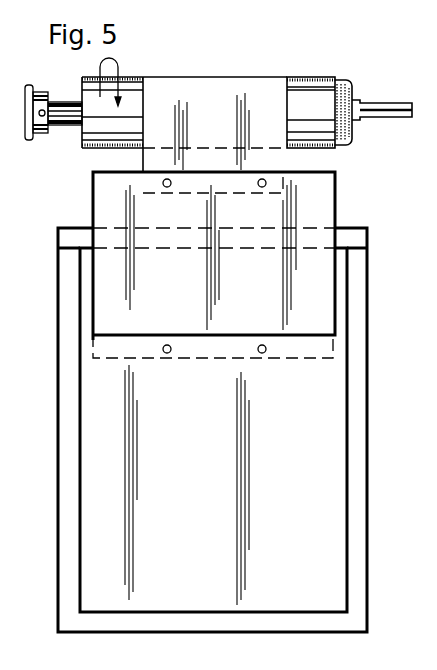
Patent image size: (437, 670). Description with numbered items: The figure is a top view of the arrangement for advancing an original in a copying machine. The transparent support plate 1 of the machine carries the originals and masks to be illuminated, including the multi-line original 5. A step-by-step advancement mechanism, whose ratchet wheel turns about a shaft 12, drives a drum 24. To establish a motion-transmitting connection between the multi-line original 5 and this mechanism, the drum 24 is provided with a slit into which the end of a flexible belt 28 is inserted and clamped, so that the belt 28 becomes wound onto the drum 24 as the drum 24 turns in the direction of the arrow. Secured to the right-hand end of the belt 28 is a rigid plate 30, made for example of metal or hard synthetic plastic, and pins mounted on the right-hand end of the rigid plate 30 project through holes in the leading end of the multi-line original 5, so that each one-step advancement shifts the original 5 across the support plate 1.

The transparent support plate 1 is at (358, 425).
The multi-line original 5 is at (330, 488).
The shaft 12 is at (388, 115).
The drum 24 is at (310, 88).
The flexible belt 28 is at (218, 87).
The rigid plate 30 is at (318, 202).